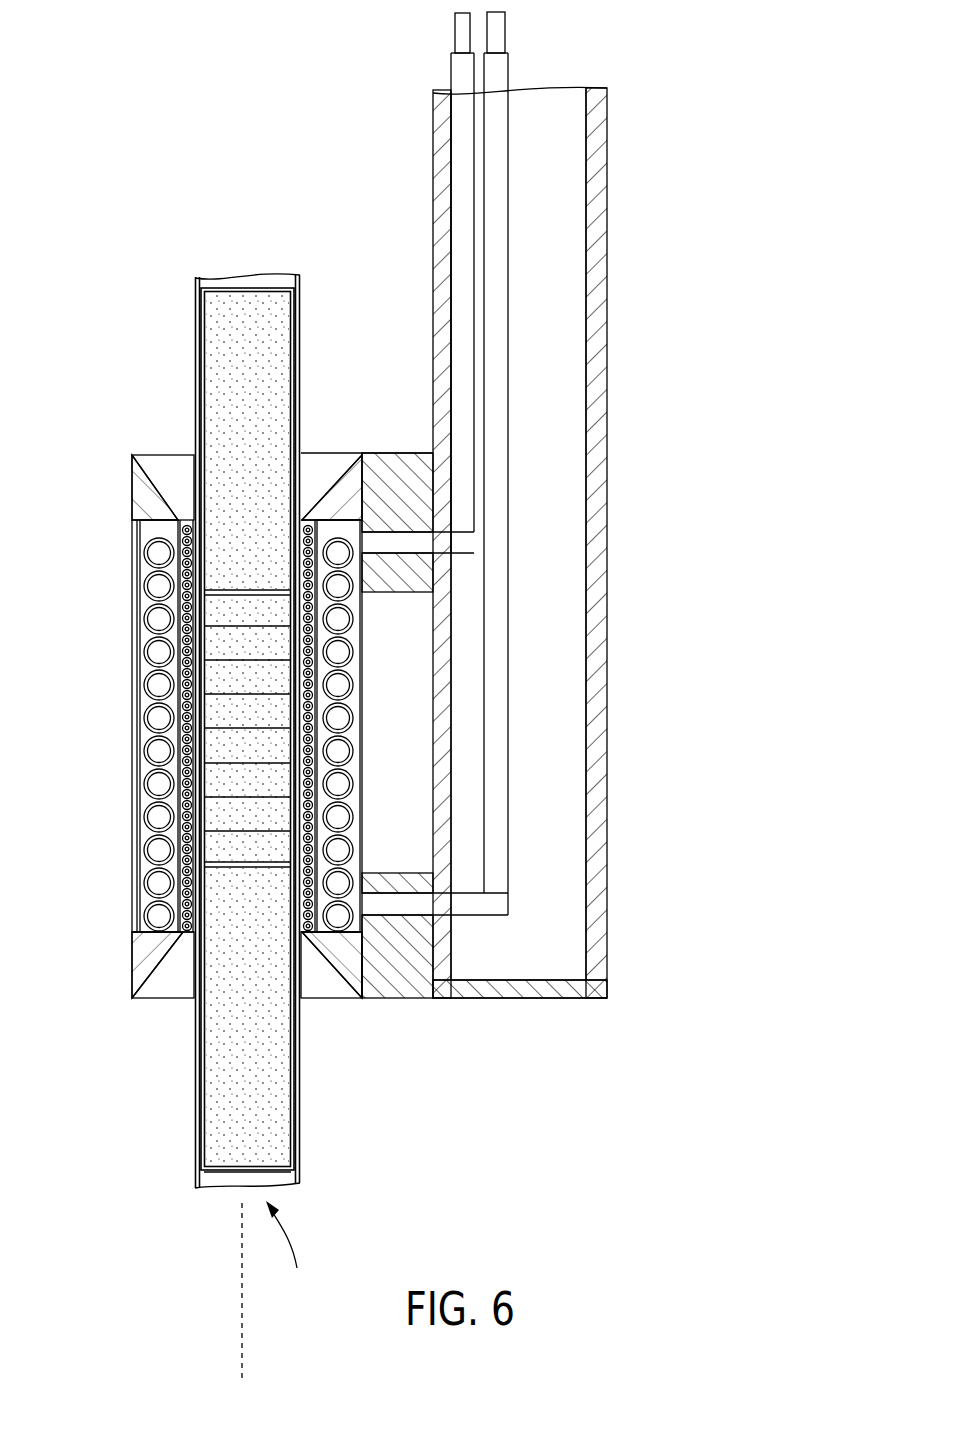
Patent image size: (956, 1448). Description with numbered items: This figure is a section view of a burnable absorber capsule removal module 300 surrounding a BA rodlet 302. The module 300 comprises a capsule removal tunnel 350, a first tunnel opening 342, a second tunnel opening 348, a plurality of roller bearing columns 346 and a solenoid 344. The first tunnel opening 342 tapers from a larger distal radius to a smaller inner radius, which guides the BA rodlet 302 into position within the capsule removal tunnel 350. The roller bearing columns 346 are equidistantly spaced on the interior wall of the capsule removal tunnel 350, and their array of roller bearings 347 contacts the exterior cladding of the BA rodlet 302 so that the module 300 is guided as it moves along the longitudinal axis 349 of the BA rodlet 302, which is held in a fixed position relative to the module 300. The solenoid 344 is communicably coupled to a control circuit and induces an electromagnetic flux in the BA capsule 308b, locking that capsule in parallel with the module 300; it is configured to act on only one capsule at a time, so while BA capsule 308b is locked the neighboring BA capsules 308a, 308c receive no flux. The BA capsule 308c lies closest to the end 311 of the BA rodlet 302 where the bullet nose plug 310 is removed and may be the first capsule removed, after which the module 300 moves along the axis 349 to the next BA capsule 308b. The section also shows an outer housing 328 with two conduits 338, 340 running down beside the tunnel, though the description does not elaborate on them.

The burnable absorber capsule removal module 300 is at (652, 176).
The BA rodlet 302 is at (195, 300).
The BA capsule 308a is at (237, 367).
The BA capsule 308b is at (225, 648).
The BA capsule 308c is at (247, 1047).
The bullet nose plug 310 is at (225, 1182).
The end of the BA rodlet 311 is at (300, 1246).
The housing 328 is at (440, 200).
The fluid conduit 338 is at (497, 72).
The fluid conduit 340 is at (456, 72).
The first tunnel opening 342 is at (168, 468).
The solenoid 344 is at (155, 785).
The roller bearing columns 346 is at (183, 933).
The roller bearings 347 is at (180, 820).
The second tunnel opening 348 is at (175, 978).
The longitudinal axis 349 is at (240, 1280).
The capsule removal tunnel 350 is at (305, 937).